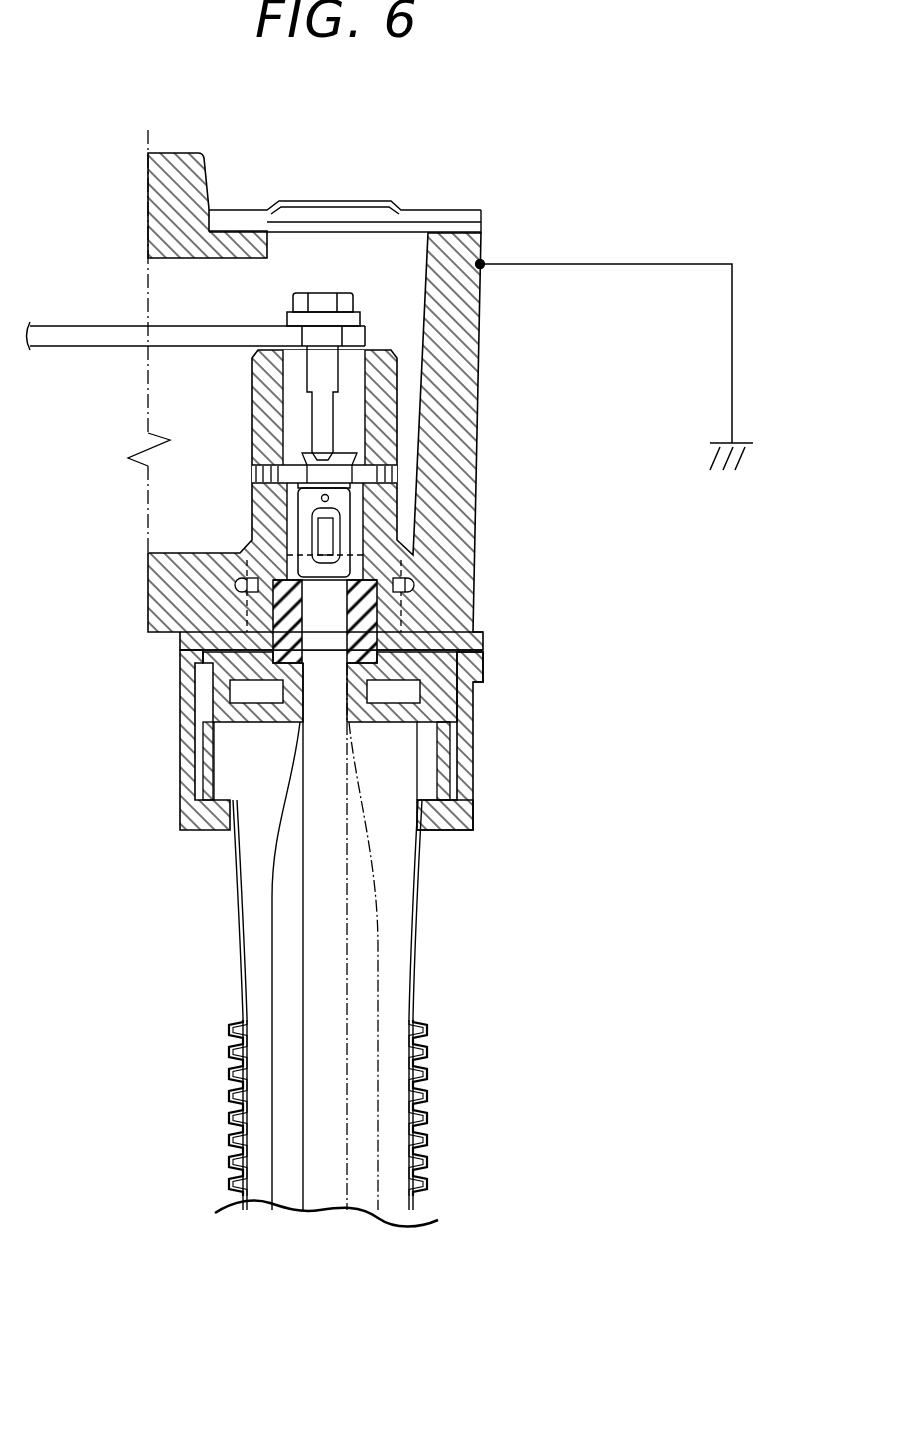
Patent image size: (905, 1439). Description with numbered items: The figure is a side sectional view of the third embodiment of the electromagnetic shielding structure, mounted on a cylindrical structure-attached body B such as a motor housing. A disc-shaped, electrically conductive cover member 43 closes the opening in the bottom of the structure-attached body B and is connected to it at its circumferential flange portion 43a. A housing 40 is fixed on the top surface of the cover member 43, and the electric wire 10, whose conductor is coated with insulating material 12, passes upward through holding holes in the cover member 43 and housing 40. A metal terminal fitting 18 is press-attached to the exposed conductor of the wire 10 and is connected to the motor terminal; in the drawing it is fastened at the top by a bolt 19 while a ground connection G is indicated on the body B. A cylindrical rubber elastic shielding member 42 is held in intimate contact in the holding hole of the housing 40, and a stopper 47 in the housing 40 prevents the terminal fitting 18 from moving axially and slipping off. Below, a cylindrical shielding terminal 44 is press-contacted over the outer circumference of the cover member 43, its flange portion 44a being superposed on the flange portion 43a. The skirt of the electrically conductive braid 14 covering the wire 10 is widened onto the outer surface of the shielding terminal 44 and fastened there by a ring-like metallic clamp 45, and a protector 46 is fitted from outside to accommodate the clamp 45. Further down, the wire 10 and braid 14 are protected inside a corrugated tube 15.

The electric wire 10 is at (363, 970).
The insulating material 12 is at (288, 1193).
The electrically conductive braid 14 is at (418, 950).
The corrugated tube 15 is at (425, 1117).
The metal terminal fitting 18 is at (347, 510).
The fastening bolt and nut 19 is at (325, 300).
The housing 40 is at (390, 532).
The elastic shielding member 42 is at (372, 627).
The cover member 43 is at (471, 733).
The flange portion 43a is at (478, 640).
The shielding terminal 44 is at (192, 731).
The flange portion 44a is at (481, 660).
The metallic clamp 45 is at (197, 773).
The protector 46 is at (462, 817).
The stopper 47 is at (392, 472).
The structure-attached body B is at (470, 337).
The ground G is at (629, 365).